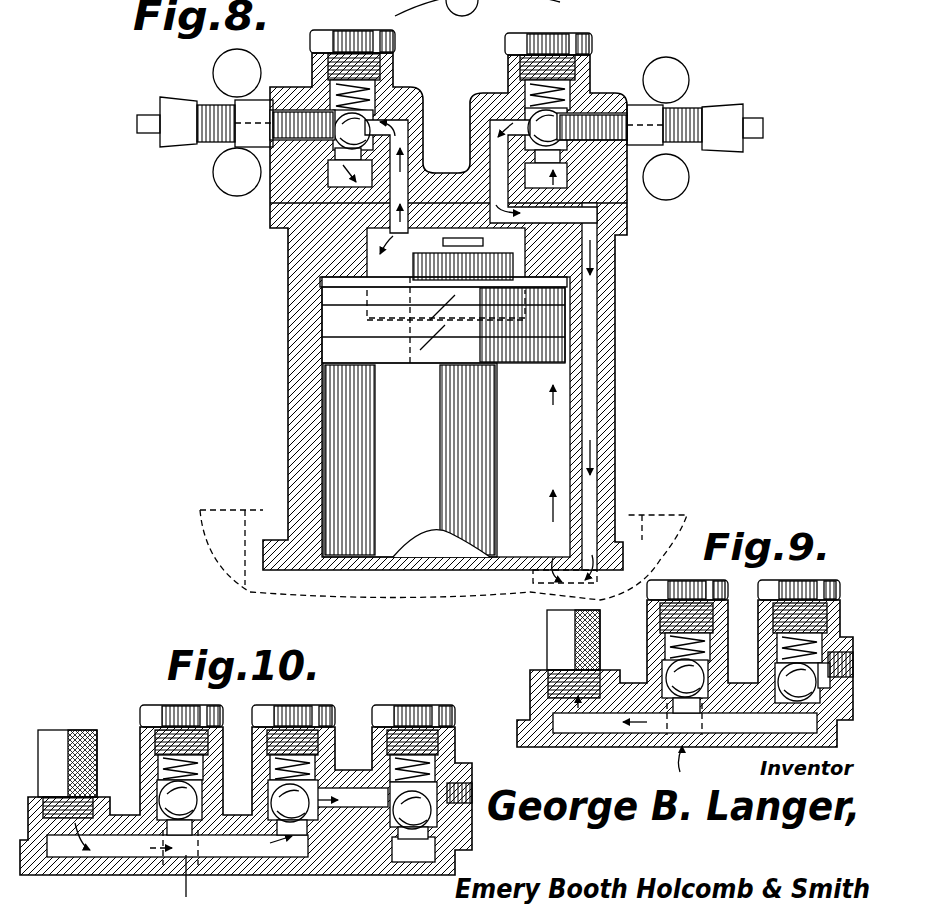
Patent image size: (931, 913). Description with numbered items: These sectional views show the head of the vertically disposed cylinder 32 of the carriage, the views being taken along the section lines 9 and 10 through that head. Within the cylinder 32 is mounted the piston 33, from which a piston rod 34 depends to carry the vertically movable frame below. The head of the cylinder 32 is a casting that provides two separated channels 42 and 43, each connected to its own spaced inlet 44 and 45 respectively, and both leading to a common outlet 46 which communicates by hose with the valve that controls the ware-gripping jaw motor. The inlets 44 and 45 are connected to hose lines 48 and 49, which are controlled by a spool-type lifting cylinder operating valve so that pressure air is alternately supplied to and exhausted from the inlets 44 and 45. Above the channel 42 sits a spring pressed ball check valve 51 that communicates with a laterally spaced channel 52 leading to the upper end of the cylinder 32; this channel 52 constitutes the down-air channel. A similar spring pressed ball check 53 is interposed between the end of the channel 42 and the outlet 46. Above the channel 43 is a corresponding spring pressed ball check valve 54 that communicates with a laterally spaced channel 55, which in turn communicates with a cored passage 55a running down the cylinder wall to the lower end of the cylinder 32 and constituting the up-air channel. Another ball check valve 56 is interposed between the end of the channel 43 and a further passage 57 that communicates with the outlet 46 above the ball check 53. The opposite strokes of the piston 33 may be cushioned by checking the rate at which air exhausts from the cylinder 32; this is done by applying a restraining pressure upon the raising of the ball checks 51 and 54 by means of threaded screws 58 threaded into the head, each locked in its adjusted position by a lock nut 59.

In FIG. 8, the section line 9— 9 is at (402, 12).
In FIG. 8, the section line 10— 10 is at (490, 2).
In FIG. 8, the cylinder 32 is at (614, 385).
In FIG. 8, the piston 33 is at (340, 323).
In FIG. 8, the piston rod 34 is at (480, 470).
In FIG. 8, the channel 42 is at (310, 205).
In FIG. 9, the channel 42 is at (752, 740).
In FIG. 10, the channel 42 is at (418, 856).
In FIG. 8, the channel 43 is at (567, 182).
In FIG. 10, the channel 43 is at (262, 858).
In FIG. 9, the inlet 44 is at (550, 686).
In FIG. 10, the inlet 45 is at (40, 813).
In FIG. 9, the common outlet 46 is at (854, 656).
In FIG. 10, the common outlet 46 is at (472, 788).
In FIG. 9, the hose line 48 is at (548, 625).
In FIG. 10, the hose line 49 is at (70, 736).
In FIG. 8, the spring pressed ball check valve 51 is at (333, 172).
In FIG. 9, the spring pressed ball check valve 51 is at (683, 672).
In FIG. 8, the down air channel 52 is at (408, 130).
In FIG. 9, the down air channel 52 is at (707, 723).
In FIG. 10, the down air channel 52 is at (175, 884).
In FIG. 10, the ball check 53 is at (345, 850).
In FIG. 10, the spring pressed ball check valve 54 is at (165, 795).
In FIG. 8, the up air channel 55 is at (495, 120).
In FIG. 9, the up air channel 55 is at (795, 682).
In FIG. 10, the up air channel 55 is at (177, 844).
In FIG. 8, the cored passage 55a is at (599, 240).
In FIG. 10, the ball check valve 56 is at (257, 848).
In FIG. 10, the passage 57 is at (347, 800).
In FIG. 8, the threaded screw 58 is at (165, 144).
In FIG. 8, the lock nut 59 is at (258, 100).